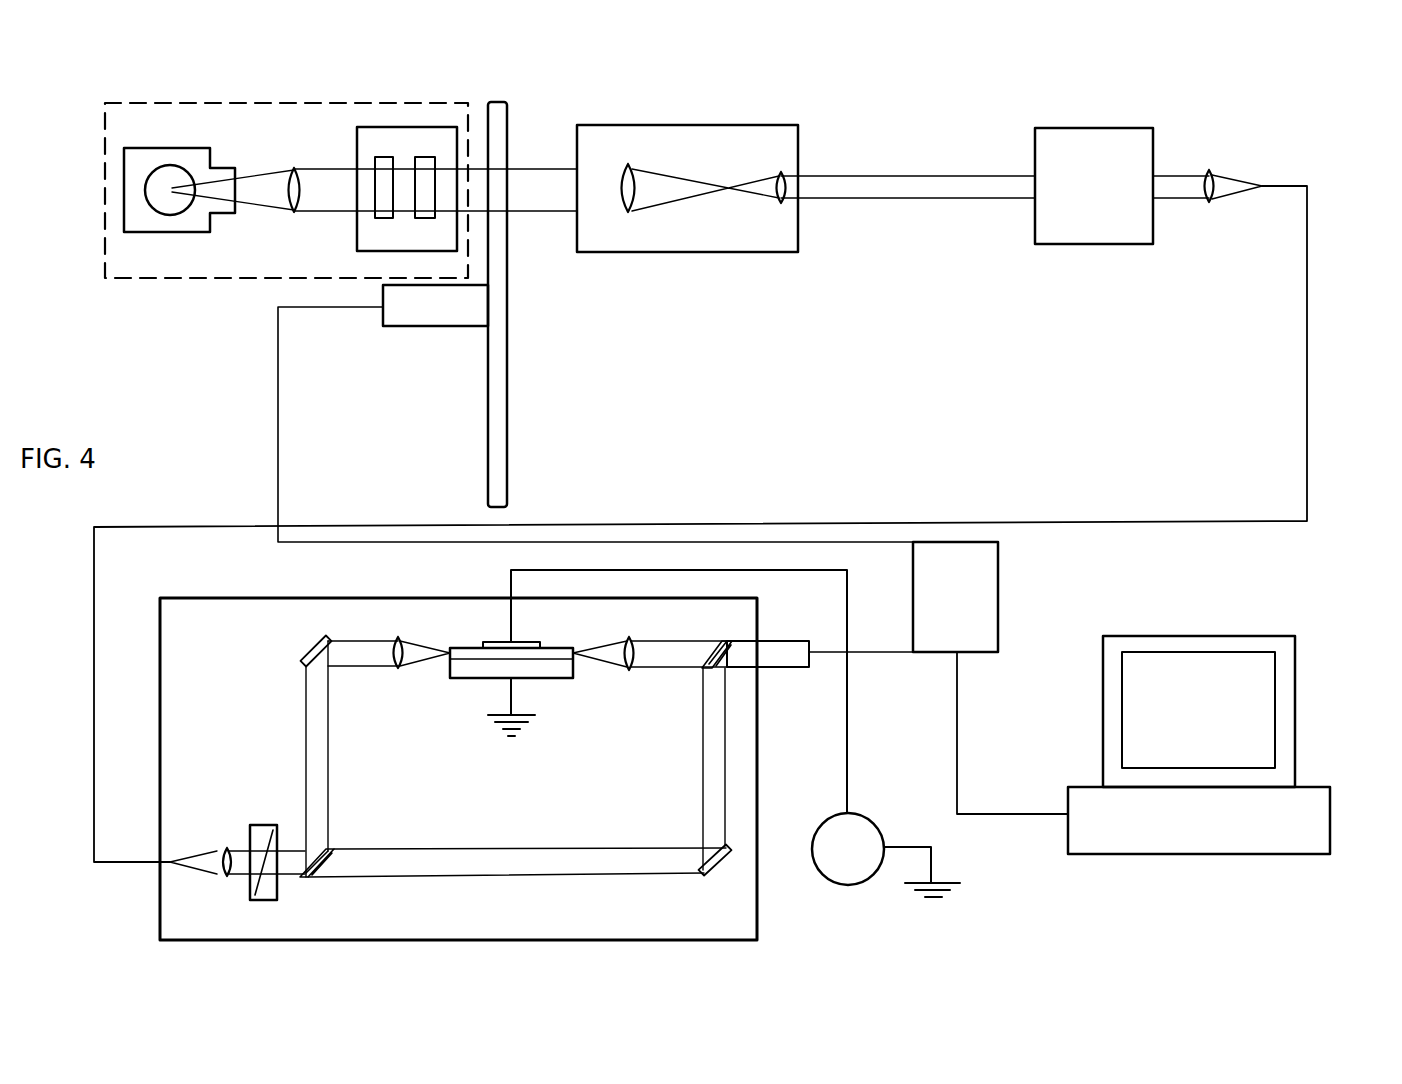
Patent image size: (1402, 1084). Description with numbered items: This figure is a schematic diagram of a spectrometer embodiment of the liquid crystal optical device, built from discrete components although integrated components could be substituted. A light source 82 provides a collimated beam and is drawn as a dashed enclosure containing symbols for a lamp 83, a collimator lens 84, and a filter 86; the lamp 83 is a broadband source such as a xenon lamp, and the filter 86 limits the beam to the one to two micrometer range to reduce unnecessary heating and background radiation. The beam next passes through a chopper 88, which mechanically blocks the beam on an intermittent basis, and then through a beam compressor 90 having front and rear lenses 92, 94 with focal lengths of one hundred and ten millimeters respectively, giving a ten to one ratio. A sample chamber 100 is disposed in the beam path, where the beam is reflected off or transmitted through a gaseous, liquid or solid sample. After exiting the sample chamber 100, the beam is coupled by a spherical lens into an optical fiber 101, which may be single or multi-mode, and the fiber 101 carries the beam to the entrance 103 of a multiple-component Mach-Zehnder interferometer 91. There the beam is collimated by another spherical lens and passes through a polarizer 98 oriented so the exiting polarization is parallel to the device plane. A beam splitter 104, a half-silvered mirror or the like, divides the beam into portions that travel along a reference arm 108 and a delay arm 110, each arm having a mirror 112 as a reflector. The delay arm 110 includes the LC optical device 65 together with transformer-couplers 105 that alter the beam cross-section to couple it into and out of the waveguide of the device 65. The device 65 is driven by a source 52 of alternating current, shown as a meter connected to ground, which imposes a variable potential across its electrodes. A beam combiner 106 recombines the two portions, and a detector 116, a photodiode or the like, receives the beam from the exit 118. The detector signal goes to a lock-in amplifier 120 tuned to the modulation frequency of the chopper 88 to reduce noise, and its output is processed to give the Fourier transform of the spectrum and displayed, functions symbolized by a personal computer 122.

The light source 82 is at (176, 101).
The lamp 83 is at (158, 234).
The collimator lens 84 is at (288, 214).
The filter 86 is at (415, 127).
The chopper 88 is at (388, 328).
The beam compressor 90 is at (686, 125).
The front lens 92 is at (626, 214).
The rear lens 94 is at (780, 205).
The sample chamber 100 is at (1110, 128).
The optical fiber 101 is at (1307, 247).
The multiple-component Mach-Zehnder interferometer 91 is at (213, 598).
The entrance 103 is at (170, 860).
The polarizer 98 is at (262, 824).
The beam splitter 104 is at (326, 875).
The delay arm 110 is at (362, 638).
The mirror 112 is at (310, 639).
The transformer-coupler 105 is at (397, 670).
The LC optical device 65 is at (462, 646).
The beam combiner 106 is at (708, 640).
The reference arm 108 is at (703, 760).
The detector 116 is at (785, 640).
The exit 118 is at (742, 667).
The lock-in amplifier 120 is at (998, 596).
The source of alternating current 52 is at (870, 822).
The personal computer 122 is at (1297, 735).